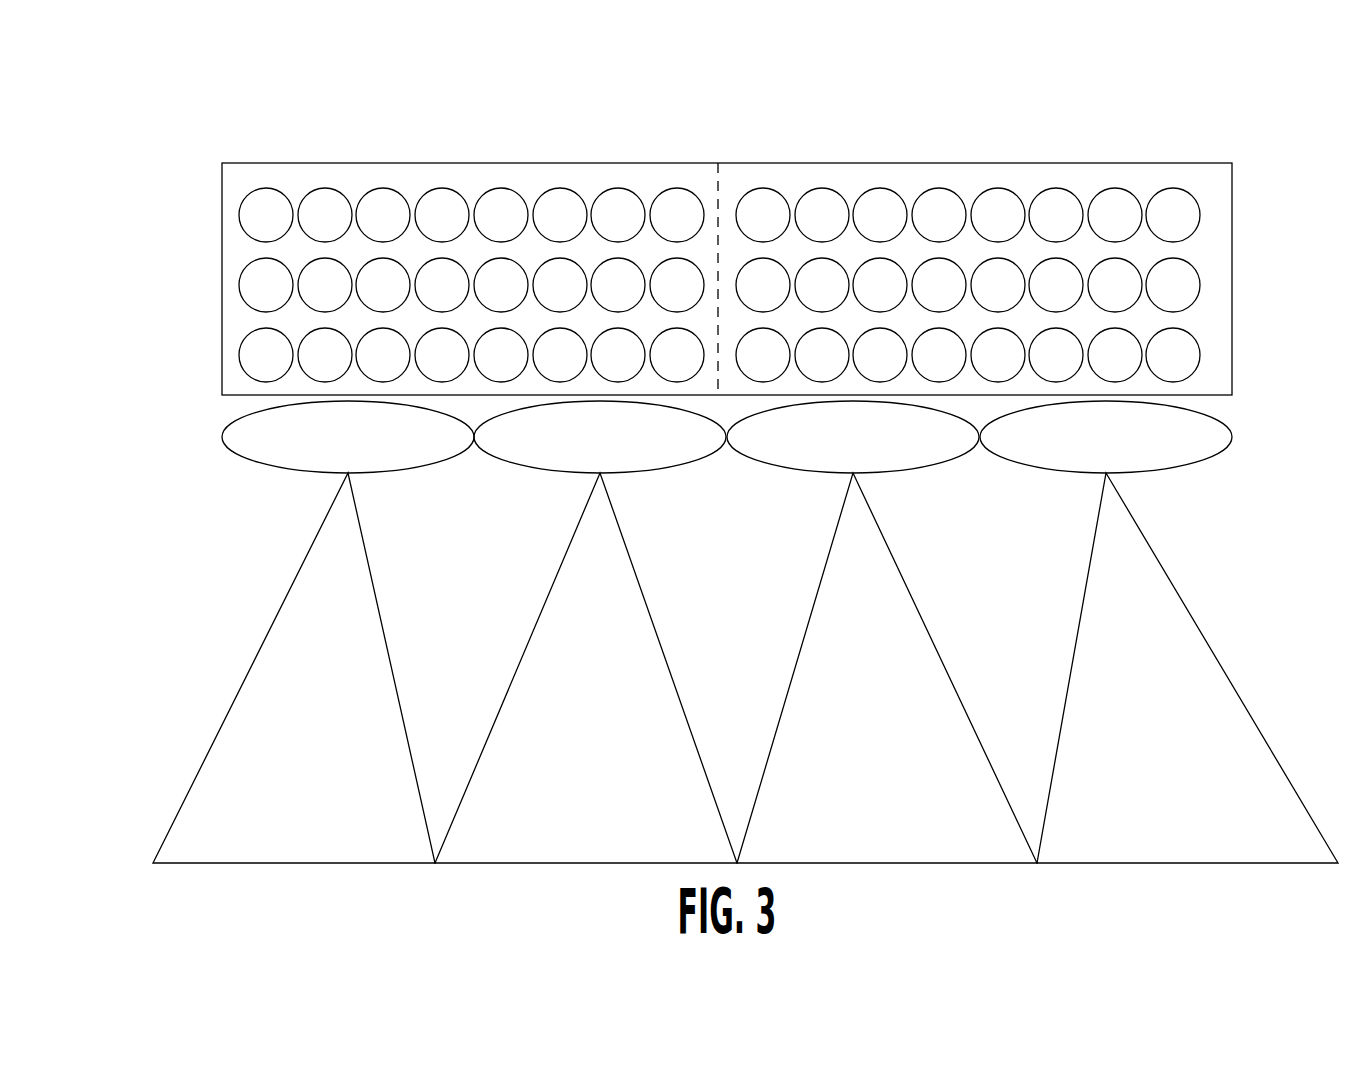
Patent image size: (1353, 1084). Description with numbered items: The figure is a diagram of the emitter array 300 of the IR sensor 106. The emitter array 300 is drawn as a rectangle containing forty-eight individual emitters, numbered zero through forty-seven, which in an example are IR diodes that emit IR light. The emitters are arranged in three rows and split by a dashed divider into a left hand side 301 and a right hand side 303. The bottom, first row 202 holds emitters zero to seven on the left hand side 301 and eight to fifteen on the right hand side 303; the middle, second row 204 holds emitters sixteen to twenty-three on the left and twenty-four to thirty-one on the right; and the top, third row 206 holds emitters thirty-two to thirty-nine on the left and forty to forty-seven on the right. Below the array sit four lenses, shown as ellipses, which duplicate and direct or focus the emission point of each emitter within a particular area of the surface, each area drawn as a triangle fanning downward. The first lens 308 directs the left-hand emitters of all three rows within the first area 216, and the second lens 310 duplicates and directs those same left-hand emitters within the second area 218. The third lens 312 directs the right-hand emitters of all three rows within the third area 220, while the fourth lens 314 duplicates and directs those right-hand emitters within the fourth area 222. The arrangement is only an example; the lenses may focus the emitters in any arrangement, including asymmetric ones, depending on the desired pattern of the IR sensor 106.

The IR sensor 106 is at (109, 122).
The emitter array 300 is at (304, 169).
The left hand side 301 is at (627, 168).
The right hand side 303 is at (890, 168).
The third row 206 is at (192, 183).
The second row 204 is at (192, 255).
The first row 202 is at (192, 325).
The first lens 308 is at (329, 452).
The second lens 310 is at (581, 452).
The third lens 312 is at (834, 452).
The fourth lens 314 is at (1087, 452).
The first area 216 is at (274, 852).
The second area 218 is at (569, 852).
The third area 220 is at (864, 852).
The fourth area 222 is at (1161, 852).